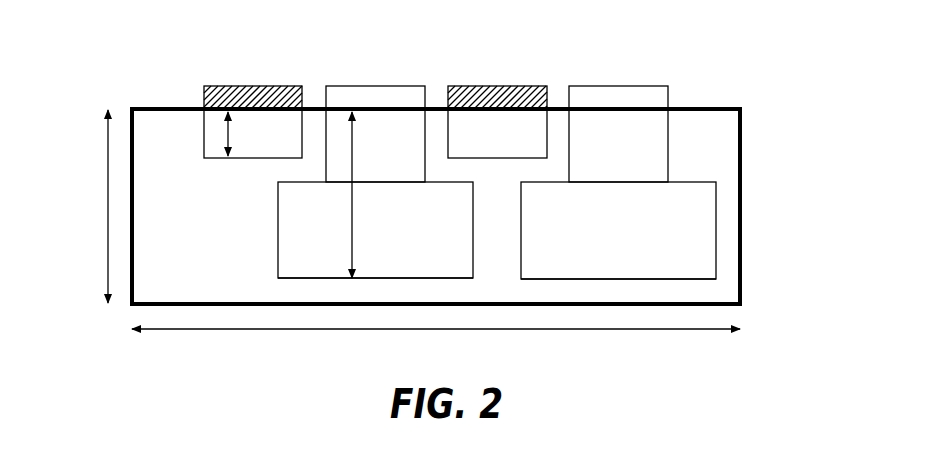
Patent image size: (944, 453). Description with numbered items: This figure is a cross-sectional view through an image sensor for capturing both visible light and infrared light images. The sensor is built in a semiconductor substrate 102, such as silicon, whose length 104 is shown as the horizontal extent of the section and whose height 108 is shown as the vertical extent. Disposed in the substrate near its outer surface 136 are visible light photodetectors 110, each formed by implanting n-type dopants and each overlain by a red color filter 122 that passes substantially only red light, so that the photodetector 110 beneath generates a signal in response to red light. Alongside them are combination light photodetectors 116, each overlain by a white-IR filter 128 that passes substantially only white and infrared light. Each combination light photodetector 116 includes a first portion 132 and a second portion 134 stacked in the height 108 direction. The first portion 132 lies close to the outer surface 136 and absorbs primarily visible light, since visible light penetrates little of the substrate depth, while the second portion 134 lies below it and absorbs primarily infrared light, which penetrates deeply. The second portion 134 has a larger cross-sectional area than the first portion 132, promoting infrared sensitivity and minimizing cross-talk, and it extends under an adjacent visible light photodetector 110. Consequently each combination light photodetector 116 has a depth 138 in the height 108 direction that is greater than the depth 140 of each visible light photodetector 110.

The semiconductor substrate 102 is at (743, 167).
The length 104 is at (238, 331).
The height 108 is at (108, 215).
The visible light photodetector 110 is at (210, 166).
The combination light photodetector 116 is at (272, 278).
The red color filter 122 is at (252, 86).
The white-IR filter 128 is at (375, 86).
The first portion 132 is at (419, 176).
The second portion 134 is at (460, 270).
The semiconductor substrate outer surface 136 is at (716, 106).
The depth 138 is at (355, 218).
The depth 140 is at (231, 131).